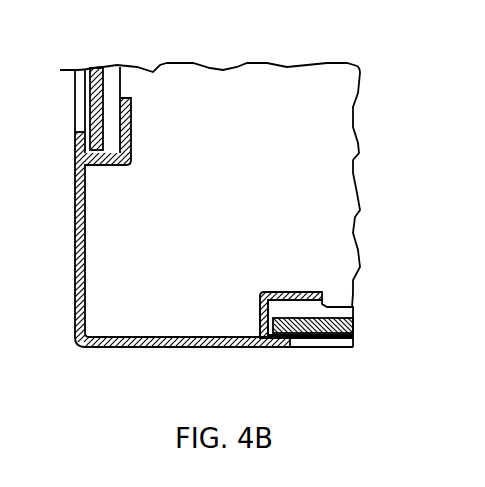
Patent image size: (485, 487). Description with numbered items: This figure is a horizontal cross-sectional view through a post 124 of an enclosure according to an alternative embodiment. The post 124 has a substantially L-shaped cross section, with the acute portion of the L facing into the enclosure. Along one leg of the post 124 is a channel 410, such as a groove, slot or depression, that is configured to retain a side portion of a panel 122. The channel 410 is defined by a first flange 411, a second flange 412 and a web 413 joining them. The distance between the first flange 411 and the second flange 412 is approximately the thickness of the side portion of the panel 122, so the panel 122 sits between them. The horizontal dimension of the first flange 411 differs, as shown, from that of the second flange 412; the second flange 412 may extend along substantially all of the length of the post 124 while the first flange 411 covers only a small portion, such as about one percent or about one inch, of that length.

The post 124 is at (75, 282).
The channel 410 is at (297, 315).
The first flange 411 is at (277, 340).
The second flange 412 is at (258, 286).
The web 413 is at (260, 315).
The panel 122 is at (323, 327).